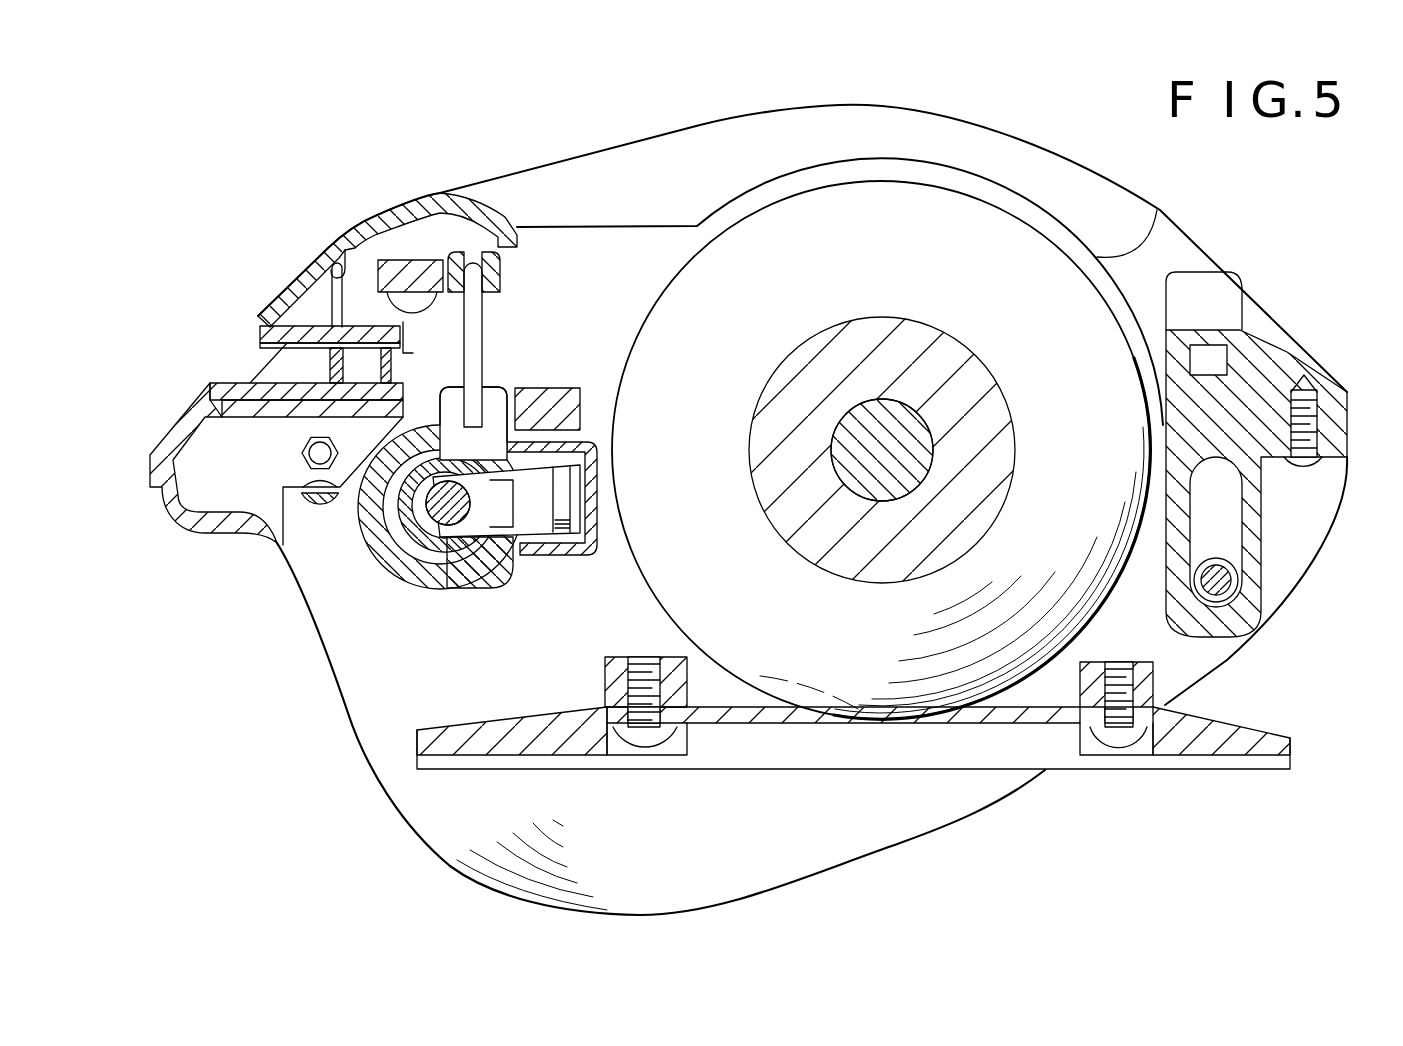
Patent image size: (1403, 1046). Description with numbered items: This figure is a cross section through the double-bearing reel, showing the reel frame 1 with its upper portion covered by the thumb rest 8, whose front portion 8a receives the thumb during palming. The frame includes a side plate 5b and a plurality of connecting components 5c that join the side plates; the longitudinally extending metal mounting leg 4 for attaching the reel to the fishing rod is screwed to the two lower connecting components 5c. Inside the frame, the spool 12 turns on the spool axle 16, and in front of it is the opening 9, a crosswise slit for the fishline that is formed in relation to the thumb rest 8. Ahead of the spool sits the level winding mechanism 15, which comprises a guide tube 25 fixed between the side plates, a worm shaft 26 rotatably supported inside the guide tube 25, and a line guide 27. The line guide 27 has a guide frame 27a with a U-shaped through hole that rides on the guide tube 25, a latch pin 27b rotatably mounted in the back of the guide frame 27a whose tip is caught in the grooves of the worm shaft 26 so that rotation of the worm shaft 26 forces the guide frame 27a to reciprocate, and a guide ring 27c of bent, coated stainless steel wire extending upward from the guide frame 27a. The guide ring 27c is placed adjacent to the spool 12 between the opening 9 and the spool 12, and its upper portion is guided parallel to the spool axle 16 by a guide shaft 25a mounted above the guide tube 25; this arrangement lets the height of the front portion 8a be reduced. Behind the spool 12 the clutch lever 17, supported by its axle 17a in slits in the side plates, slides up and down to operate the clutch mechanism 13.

The reel frame 1 is at (1215, 212).
The mounting leg 4 is at (1196, 748).
The side plate 5b is at (608, 253).
The connecting components 5c is at (415, 257).
The thumb rest 8 is at (760, 137).
The front portion of the thumb rest 8a is at (366, 234).
The opening 9 is at (272, 346).
The spool 12 is at (1005, 238).
The clutch mechanism 13 is at (188, 418).
The level winding mechanism 15 is at (417, 600).
The spool axle 16 is at (863, 417).
The clutch lever 17 is at (1287, 352).
The axle of the clutch lever 17a is at (1254, 600).
The guide tube 25 is at (448, 588).
The guide shaft 25a is at (473, 250).
The worm shaft 26 is at (405, 552).
The line guide 27 is at (483, 598).
The guide frame 27a is at (515, 568).
The latch pin 27b is at (553, 523).
The guide ring 27c is at (486, 360).